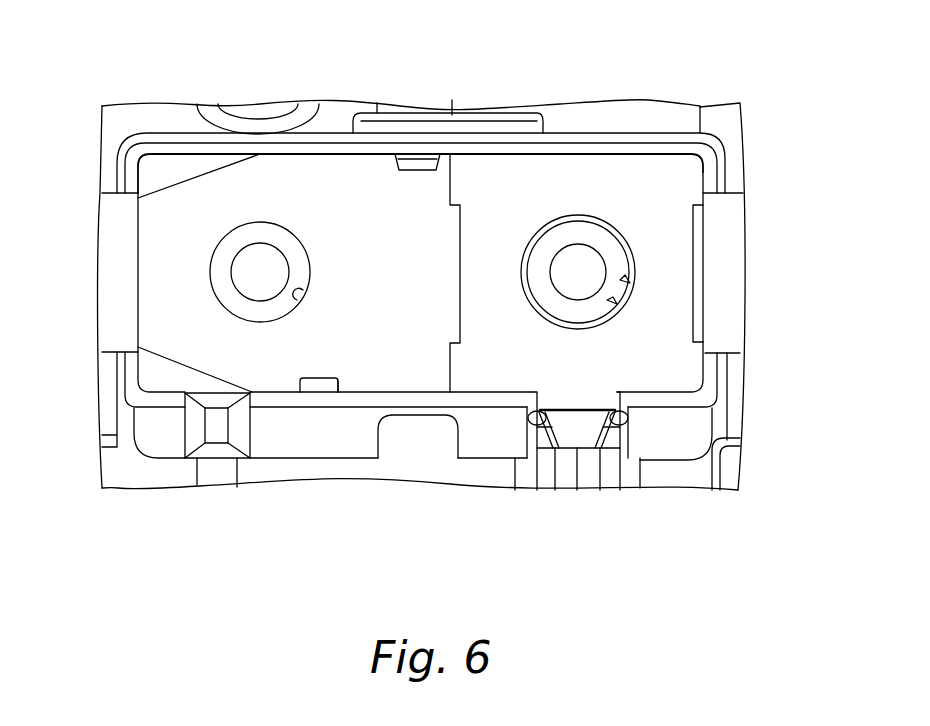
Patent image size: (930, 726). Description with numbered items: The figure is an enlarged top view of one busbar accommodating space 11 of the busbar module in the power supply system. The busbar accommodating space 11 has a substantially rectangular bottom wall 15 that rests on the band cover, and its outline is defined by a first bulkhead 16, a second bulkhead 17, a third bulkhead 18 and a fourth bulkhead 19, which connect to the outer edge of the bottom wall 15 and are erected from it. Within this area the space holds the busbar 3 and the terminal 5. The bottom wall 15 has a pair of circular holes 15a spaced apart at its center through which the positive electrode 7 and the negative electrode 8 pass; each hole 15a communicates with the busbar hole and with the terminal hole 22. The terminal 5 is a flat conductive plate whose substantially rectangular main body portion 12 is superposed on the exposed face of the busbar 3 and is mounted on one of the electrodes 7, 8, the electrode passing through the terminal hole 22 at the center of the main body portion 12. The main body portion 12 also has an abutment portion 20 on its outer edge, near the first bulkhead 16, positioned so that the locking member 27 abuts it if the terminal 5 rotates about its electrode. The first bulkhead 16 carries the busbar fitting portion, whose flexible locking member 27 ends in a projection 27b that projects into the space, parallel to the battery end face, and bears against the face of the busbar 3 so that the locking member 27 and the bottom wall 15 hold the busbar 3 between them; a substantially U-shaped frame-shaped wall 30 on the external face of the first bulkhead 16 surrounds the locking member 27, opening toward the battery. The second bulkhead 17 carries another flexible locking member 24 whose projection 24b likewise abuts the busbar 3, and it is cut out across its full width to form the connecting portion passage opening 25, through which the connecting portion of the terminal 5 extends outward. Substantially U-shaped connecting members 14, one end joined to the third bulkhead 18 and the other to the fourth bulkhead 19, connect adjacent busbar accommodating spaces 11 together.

The busbar 3 is at (396, 337).
The terminal 5 is at (686, 280).
The positive electrode 7 is at (272, 227).
The negative electrode 8 is at (587, 258).
The busbar accommodating space 11 is at (688, 128).
The main body portion 12 is at (678, 228).
The connecting member 14 is at (118, 240).
The bottom wall 15 is at (180, 165).
The hole 15a is at (300, 293).
The first bulkhead 16 is at (610, 122).
The second bulkhead 17 is at (296, 433).
The third bulkhead 18 is at (720, 172).
The fourth bulkhead 19 is at (118, 380).
The abutment portion 20 is at (452, 180).
The terminal hole 22 is at (620, 282).
The locking member 24 is at (321, 371).
The projection 24b is at (340, 378).
The connecting portion passage opening 25 is at (580, 433).
The locking member 27 is at (420, 146).
The projection 27b is at (418, 166).
The frame-shaped wall 30 is at (468, 117).